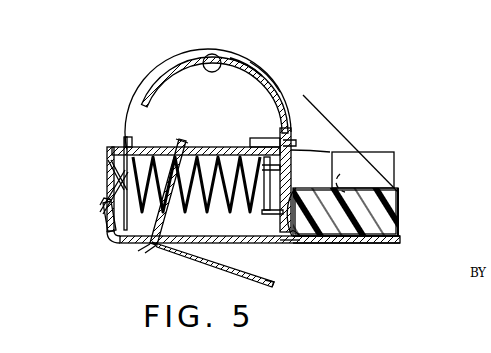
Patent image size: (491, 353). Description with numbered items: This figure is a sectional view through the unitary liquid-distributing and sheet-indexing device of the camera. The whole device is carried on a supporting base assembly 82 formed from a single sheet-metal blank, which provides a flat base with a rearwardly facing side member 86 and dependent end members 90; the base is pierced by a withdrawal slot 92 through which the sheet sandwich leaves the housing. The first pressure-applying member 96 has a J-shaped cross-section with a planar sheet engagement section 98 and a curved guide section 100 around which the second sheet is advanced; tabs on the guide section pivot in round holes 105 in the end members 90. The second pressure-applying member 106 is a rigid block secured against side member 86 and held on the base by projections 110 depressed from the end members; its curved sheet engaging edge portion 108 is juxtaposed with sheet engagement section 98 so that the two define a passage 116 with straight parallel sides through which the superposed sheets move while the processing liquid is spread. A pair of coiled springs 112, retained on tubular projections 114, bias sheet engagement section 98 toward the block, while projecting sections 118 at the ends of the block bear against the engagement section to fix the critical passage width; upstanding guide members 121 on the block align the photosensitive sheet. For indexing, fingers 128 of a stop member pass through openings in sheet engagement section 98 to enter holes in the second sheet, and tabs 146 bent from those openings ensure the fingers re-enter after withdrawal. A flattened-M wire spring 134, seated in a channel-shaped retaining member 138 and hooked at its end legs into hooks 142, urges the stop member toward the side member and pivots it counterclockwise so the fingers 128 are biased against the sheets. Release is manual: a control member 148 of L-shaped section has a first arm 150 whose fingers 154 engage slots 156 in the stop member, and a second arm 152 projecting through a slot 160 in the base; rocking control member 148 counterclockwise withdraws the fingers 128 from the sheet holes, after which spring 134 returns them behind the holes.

The supporting base assembly 82 is at (310, 91).
The side member 86 is at (405, 210).
The end members 90 is at (160, 70).
The withdrawal slot 92 is at (297, 243).
The pressure-applying member 96 is at (259, 60).
The sheet engagement section 98 is at (305, 193).
The guide section 100 is at (268, 82).
The round holes 105 is at (219, 55).
The second pressure-applying member 106 is at (380, 225).
The sheet engaging edge portion 108 is at (373, 243).
The projections 110 is at (345, 172).
The coiled springs 112 is at (213, 210).
The tubular projections 114 is at (277, 167).
The passage 116 is at (333, 150).
The projecting sections 118 is at (332, 242).
The guide members 121 is at (383, 165).
The fingers 128 is at (298, 143).
The wire spring 134 is at (102, 187).
The retaining member 138 is at (112, 155).
The hooks 142 is at (102, 221).
The tabs 146 is at (248, 121).
The control member 148 is at (170, 262).
The first arm 150 is at (160, 229).
The second arm 152 is at (272, 277).
The fingers 154 is at (180, 140).
The slots 156 is at (176, 148).
The slot 160 is at (147, 246).